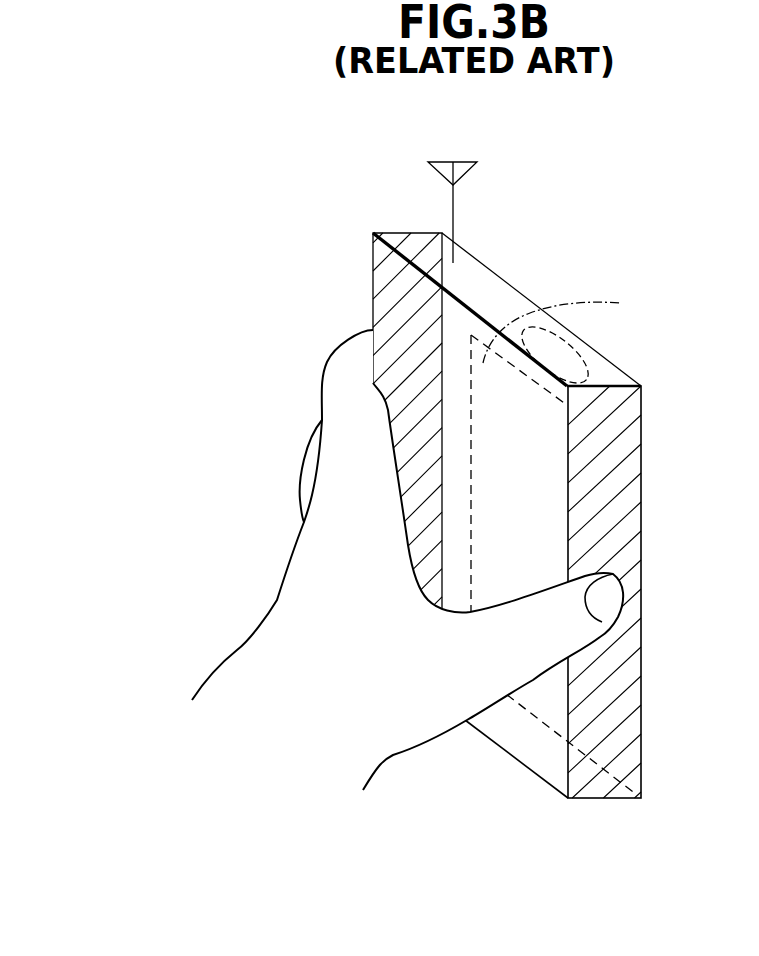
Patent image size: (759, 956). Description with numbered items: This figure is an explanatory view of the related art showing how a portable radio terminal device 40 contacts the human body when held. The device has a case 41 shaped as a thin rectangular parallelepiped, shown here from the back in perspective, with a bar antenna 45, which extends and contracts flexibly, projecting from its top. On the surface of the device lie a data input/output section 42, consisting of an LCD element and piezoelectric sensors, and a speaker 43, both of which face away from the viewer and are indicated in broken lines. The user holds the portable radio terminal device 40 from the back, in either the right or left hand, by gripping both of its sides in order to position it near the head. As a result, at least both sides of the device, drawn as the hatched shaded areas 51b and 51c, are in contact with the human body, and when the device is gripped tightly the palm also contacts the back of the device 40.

The portable radio terminal device 40 is at (641, 575).
The case 41 is at (503, 293).
The data input/output section 42 is at (569, 326).
The speaker 43 is at (563, 360).
The bar antenna 45 is at (460, 172).
The shaded area 51b is at (612, 486).
The shaded area 51c is at (373, 287).